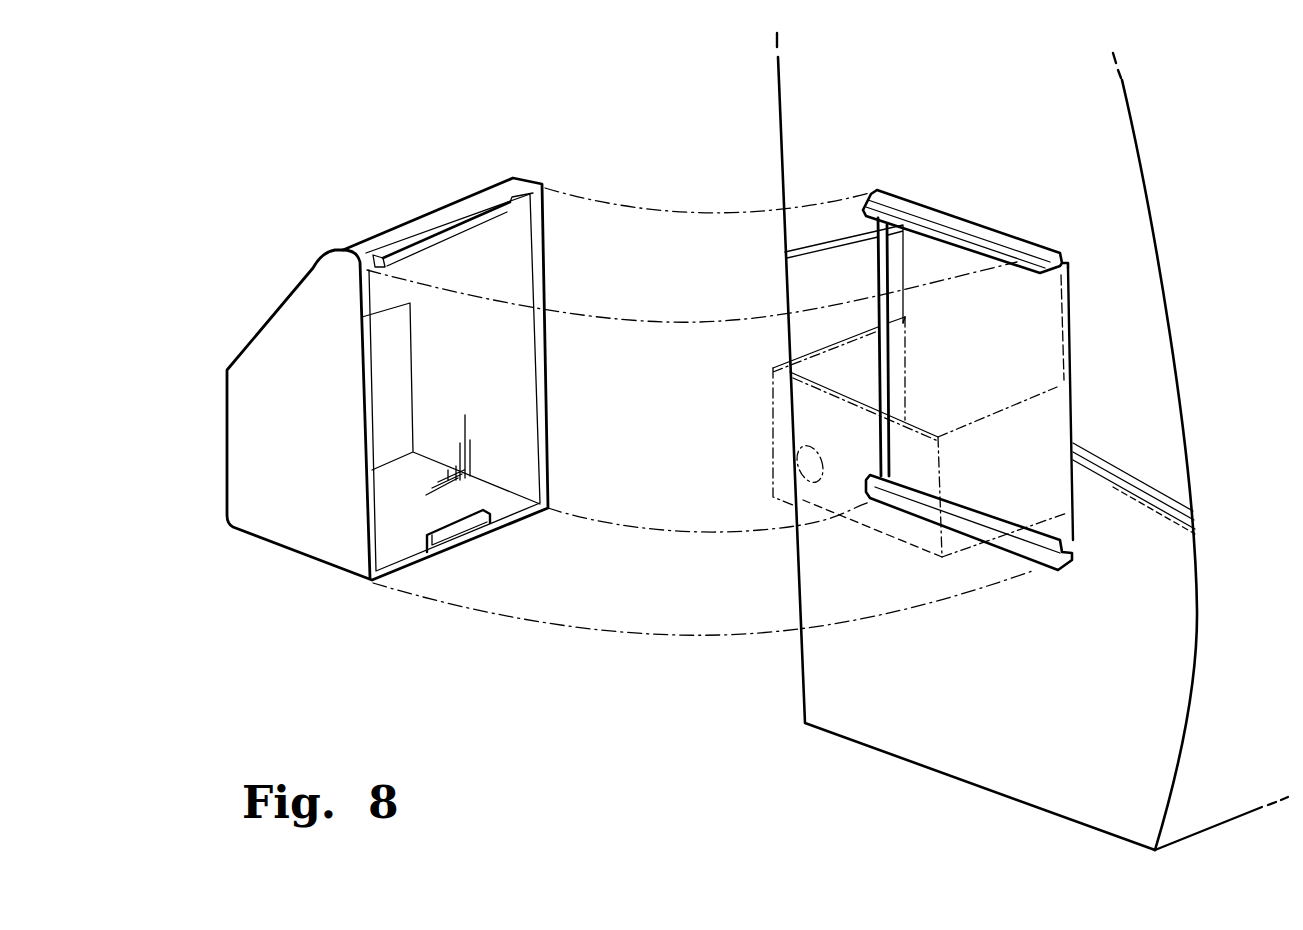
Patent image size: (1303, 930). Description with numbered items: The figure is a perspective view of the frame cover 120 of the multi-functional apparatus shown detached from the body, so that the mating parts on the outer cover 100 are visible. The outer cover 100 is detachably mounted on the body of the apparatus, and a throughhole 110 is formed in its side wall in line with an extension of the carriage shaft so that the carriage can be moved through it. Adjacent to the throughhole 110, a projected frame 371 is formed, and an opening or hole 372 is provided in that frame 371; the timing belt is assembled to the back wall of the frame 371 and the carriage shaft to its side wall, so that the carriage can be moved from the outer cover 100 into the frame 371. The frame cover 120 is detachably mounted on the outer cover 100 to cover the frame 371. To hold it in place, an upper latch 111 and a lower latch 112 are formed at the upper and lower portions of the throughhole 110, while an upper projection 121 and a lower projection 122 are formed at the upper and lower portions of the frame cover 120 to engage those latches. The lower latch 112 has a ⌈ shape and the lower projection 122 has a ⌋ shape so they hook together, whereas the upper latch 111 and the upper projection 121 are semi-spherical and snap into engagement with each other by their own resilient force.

The outer cover 100 is at (815, 117).
The throughhole 110 is at (1040, 338).
The upper latch 111 is at (970, 222).
The lower latch 112 is at (1040, 555).
The frame cover 120 is at (300, 250).
The upper projection 121 is at (410, 303).
The lower projection 122 is at (460, 537).
The frame 371 is at (780, 398).
The hole 372 is at (792, 466).